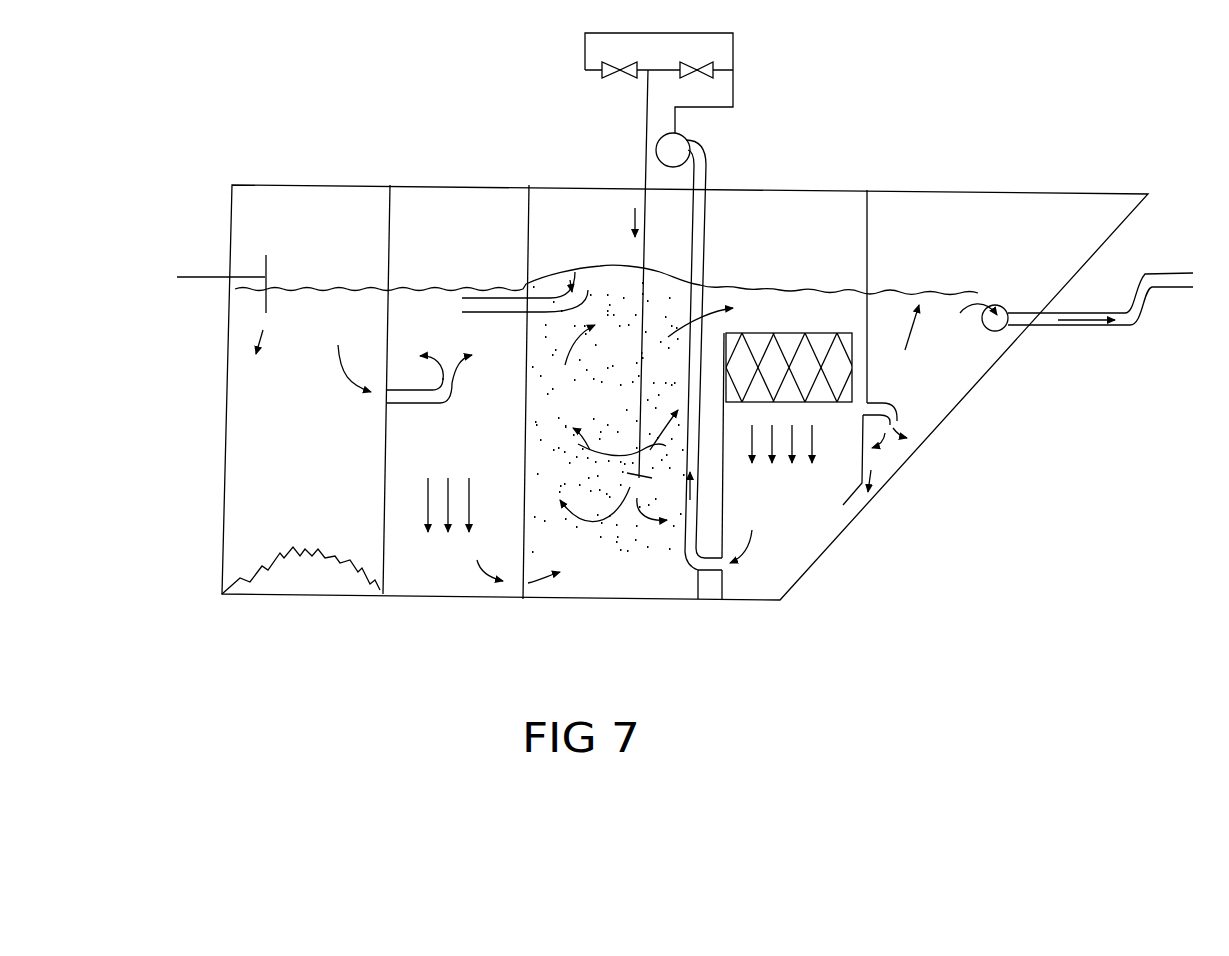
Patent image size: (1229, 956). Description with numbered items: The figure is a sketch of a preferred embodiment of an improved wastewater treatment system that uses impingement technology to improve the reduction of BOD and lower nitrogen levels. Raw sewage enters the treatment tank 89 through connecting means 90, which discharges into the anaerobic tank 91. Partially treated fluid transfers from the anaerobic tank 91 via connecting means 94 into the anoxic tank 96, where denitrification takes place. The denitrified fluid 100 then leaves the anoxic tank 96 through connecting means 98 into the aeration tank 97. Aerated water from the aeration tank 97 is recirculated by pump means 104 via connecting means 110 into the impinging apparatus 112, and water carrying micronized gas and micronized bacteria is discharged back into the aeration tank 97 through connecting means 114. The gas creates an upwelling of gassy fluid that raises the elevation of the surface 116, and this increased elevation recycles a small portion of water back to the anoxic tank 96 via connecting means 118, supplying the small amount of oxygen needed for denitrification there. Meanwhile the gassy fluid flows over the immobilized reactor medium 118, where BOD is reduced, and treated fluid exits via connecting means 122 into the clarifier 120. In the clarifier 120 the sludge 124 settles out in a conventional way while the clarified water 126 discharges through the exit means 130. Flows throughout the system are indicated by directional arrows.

The treatment tank 89 is at (636, 600).
The connecting means 90 is at (205, 277).
The anaerobic tank 91 is at (276, 428).
The connecting means 94 is at (410, 403).
The anoxic tank 96 is at (407, 552).
The aeration tank 97 is at (595, 567).
The connecting means 98 is at (512, 592).
The denitrified fluid 100 is at (477, 590).
The pump means 104 is at (675, 148).
The connecting means 110 is at (700, 600).
The impinging apparatus 112 is at (646, 78).
The connecting means 114 is at (648, 466).
The surface 116 is at (585, 272).
The connecting means / immobilized reactor medium 118 is at (787, 343).
The clarifier 120 is at (935, 410).
The connecting means 122 is at (880, 395).
The sludge 124 is at (862, 500).
The clarified water 126 is at (917, 325).
The exit means 130 is at (1068, 328).